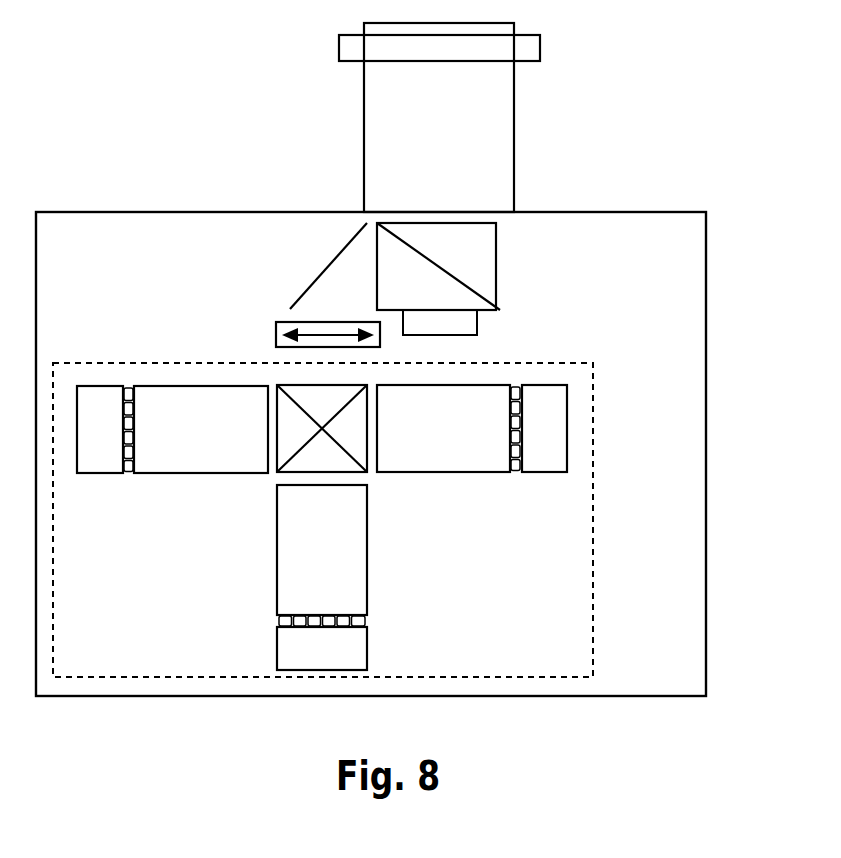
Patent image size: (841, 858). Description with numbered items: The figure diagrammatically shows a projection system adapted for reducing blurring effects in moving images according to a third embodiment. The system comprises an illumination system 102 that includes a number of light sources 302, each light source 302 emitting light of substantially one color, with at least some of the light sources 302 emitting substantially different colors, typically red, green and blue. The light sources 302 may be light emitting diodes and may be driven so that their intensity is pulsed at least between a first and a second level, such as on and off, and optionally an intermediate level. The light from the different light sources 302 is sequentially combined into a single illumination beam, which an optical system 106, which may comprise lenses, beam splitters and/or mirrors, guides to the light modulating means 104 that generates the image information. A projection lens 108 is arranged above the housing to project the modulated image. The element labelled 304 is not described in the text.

The illumination system 102 is at (220, 677).
The light modulating means 104 is at (470, 335).
The optical system 106 is at (240, 258).
The projection lens 108 is at (382, 93).
The light source 302 is at (122, 498).
The right actuator module 304 is at (448, 500).